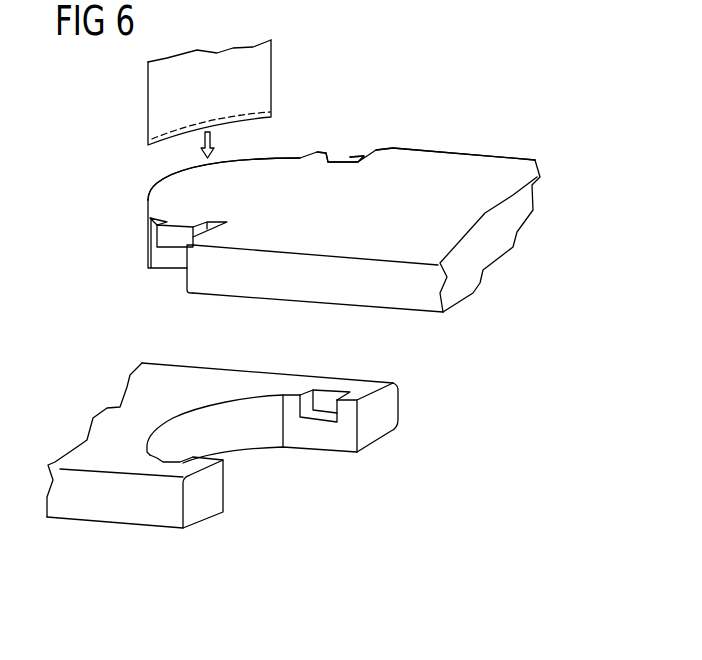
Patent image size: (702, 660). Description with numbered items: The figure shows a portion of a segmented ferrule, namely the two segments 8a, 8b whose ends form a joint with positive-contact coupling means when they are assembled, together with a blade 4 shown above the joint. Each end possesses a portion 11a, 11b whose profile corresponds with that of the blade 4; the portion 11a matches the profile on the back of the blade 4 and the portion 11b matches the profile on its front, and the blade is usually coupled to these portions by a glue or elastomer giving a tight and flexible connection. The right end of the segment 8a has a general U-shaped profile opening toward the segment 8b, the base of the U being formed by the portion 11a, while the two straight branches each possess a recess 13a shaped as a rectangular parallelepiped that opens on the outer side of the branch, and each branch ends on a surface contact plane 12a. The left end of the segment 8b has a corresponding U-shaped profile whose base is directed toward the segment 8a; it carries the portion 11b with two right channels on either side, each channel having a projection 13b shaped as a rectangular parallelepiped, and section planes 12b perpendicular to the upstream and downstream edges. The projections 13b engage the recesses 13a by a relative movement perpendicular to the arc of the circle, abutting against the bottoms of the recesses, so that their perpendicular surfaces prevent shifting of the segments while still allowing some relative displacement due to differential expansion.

The blade 4 is at (155, 97).
The first segment 8a is at (226, 459).
The second segment 8b is at (308, 210).
The portion of segment 8a 11a is at (253, 437).
The portion of segment 8b 11b is at (157, 190).
The surface contact plane 12a is at (207, 505).
The section plane 12b is at (183, 265).
The recess 13a is at (177, 458).
The projection 13b is at (185, 220).